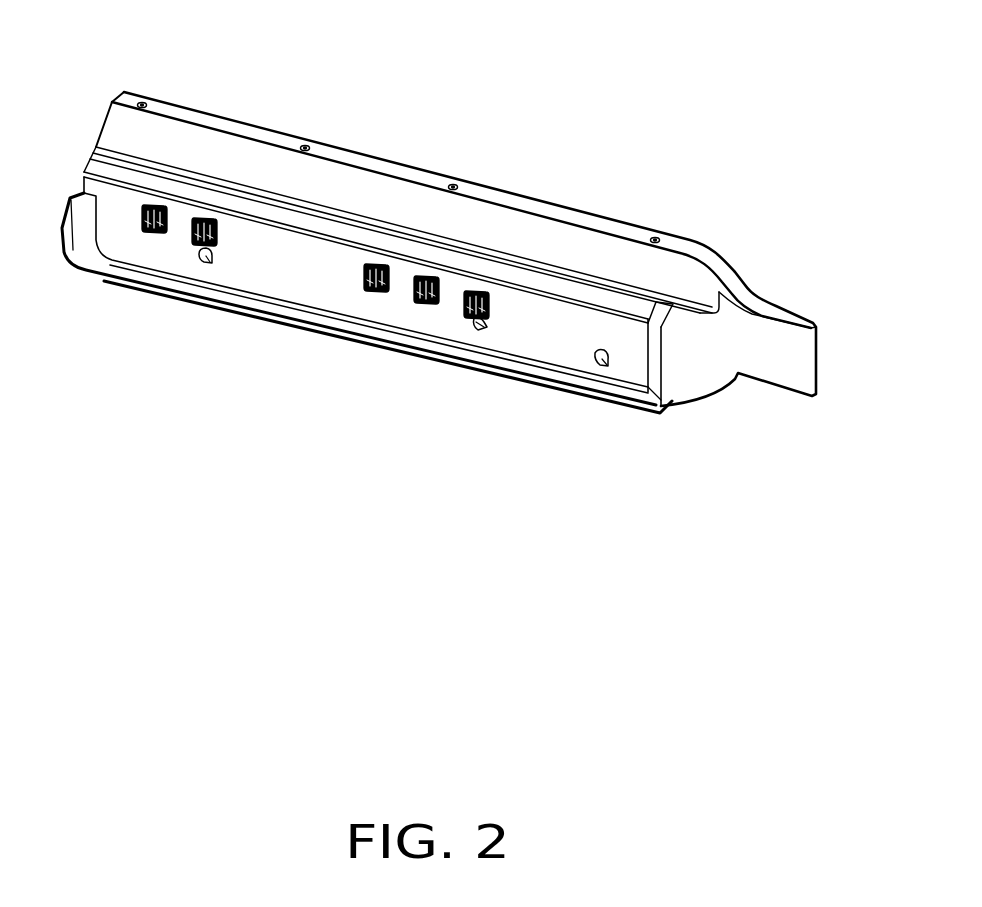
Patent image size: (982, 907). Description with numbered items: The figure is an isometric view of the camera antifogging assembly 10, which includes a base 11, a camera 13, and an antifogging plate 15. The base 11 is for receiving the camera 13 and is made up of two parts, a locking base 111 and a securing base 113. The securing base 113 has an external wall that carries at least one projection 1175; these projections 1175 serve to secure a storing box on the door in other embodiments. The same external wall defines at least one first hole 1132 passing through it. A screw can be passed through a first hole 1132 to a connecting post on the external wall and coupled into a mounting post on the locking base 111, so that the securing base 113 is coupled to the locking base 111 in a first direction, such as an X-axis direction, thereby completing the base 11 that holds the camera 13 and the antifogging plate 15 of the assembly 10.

The camera antifogging assembly 10 is at (192, 39).
The base 11 is at (404, 340).
The locking base 111 is at (378, 350).
The securing base 113 is at (638, 368).
The first hole 1132 is at (205, 264).
The projection 1175 is at (147, 236).
The camera 13 is at (318, 141).
The antifogging plate 15 is at (246, 130).